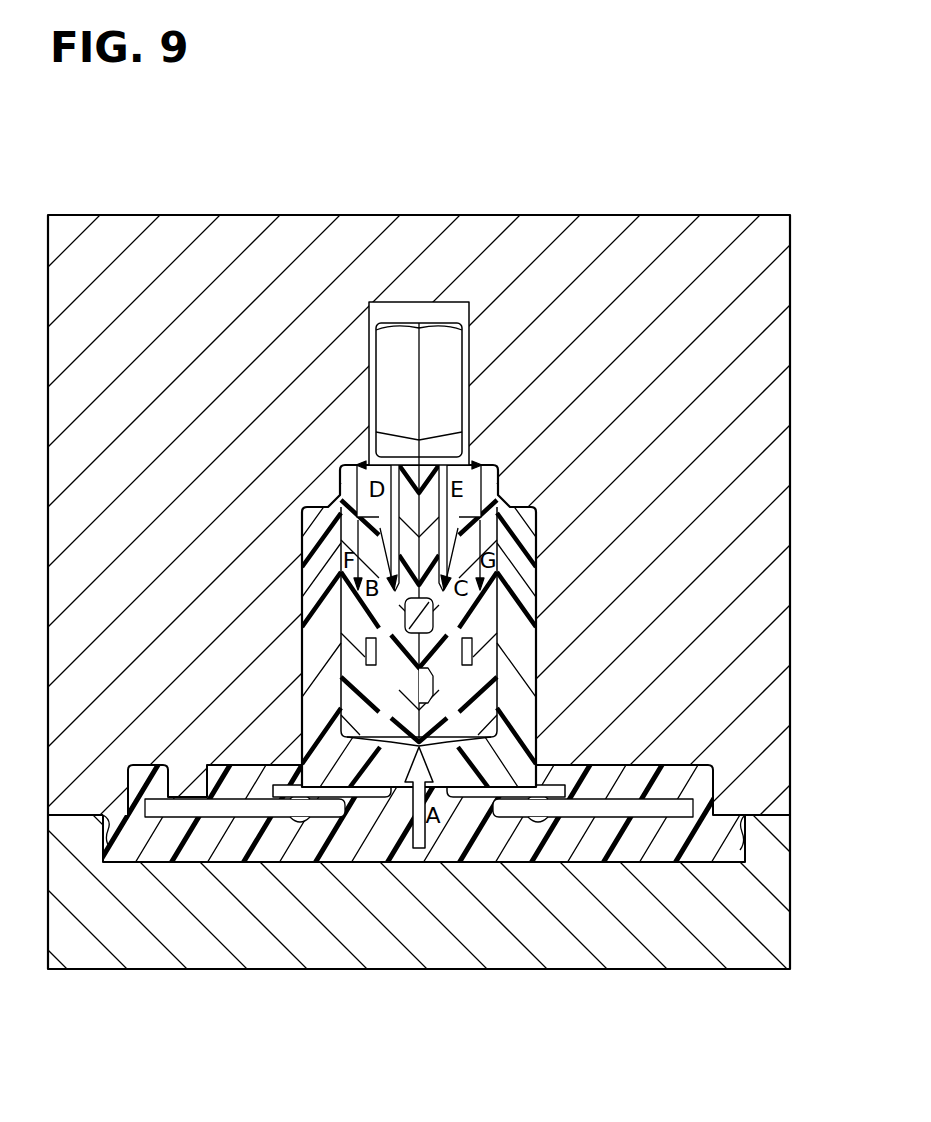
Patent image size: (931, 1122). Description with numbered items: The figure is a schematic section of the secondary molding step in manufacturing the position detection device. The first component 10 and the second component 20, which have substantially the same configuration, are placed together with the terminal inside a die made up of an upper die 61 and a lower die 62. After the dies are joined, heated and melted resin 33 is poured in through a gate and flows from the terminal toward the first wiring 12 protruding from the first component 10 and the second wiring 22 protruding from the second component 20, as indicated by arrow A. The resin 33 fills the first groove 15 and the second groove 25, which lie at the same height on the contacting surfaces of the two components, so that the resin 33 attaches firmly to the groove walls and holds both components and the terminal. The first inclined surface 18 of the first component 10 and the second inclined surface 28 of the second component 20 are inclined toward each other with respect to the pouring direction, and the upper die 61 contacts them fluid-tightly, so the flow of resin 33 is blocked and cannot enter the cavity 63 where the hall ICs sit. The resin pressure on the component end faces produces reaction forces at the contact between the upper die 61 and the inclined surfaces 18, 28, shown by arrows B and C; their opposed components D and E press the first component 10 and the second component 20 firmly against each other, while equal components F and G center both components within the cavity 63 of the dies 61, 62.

The first component 10 is at (355, 672).
The first wiring 12 is at (363, 790).
The first groove 15 is at (392, 600).
The first inclined surface 18 is at (355, 462).
The second component 20 is at (480, 680).
The second wiring 22 is at (483, 790).
The second groove 25 is at (433, 612).
The second inclined surface 28 is at (495, 450).
The resin 33 is at (597, 845).
The upper die 61 is at (245, 285).
The lower die 62 is at (237, 900).
The cavity 63 is at (416, 310).